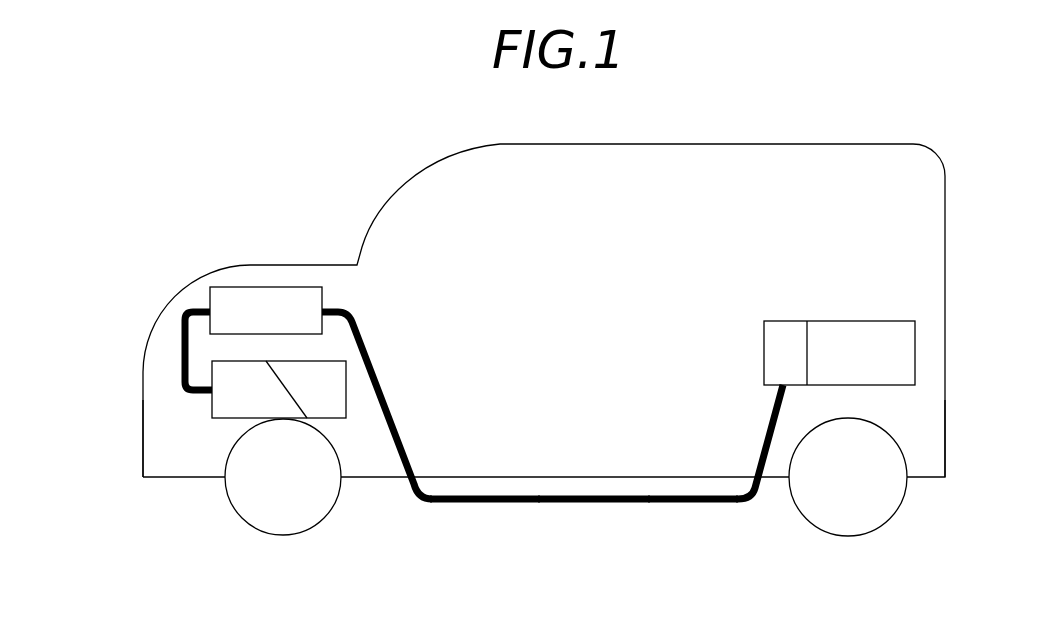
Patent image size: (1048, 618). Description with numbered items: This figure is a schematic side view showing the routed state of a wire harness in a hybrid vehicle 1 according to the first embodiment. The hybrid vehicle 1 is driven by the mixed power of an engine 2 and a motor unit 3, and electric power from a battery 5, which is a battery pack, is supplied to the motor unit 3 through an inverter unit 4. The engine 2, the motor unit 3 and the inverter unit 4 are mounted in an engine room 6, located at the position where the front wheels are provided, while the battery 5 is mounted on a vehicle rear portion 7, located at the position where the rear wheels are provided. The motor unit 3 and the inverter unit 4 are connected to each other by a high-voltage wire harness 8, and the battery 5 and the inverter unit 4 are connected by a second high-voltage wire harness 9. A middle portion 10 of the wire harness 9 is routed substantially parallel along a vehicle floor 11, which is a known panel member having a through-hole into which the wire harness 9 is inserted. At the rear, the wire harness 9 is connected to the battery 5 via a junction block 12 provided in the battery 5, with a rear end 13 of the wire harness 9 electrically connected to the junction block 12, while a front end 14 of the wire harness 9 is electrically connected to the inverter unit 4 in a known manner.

The hybrid vehicle 1 is at (283, 170).
The engine 2 is at (328, 397).
The motor unit 3 is at (225, 402).
The inverter unit 4 is at (238, 302).
The battery 5 is at (868, 321).
The engine room 6 is at (162, 447).
The vehicle rear portion 7 is at (922, 415).
The high-voltage wire harness 8 is at (177, 337).
The high-voltage wire harness 9 is at (486, 503).
The middle portion 10 is at (600, 505).
The vehicle floor 11 is at (692, 478).
The junction block 12 is at (778, 321).
The rear end 13 is at (773, 410).
The front end 14 is at (353, 312).